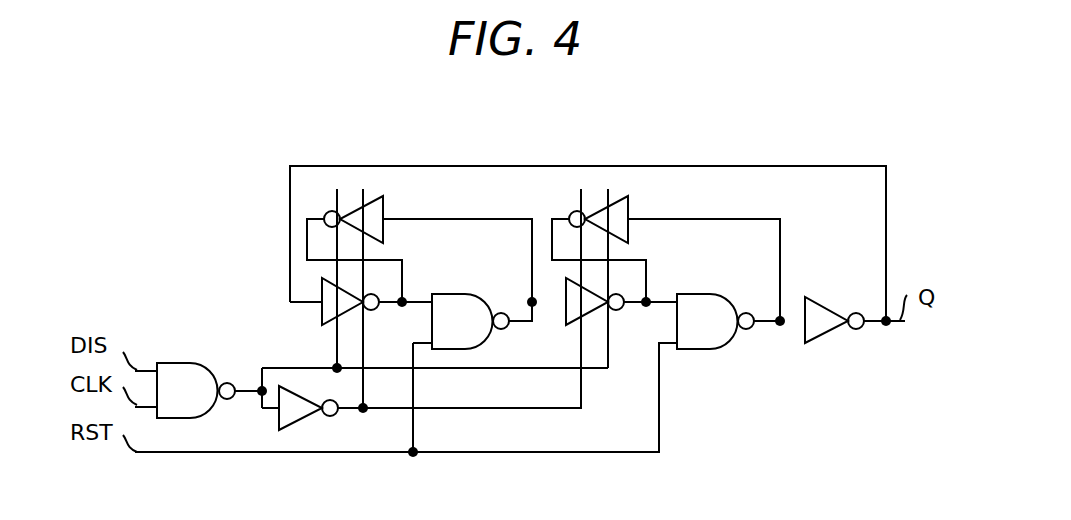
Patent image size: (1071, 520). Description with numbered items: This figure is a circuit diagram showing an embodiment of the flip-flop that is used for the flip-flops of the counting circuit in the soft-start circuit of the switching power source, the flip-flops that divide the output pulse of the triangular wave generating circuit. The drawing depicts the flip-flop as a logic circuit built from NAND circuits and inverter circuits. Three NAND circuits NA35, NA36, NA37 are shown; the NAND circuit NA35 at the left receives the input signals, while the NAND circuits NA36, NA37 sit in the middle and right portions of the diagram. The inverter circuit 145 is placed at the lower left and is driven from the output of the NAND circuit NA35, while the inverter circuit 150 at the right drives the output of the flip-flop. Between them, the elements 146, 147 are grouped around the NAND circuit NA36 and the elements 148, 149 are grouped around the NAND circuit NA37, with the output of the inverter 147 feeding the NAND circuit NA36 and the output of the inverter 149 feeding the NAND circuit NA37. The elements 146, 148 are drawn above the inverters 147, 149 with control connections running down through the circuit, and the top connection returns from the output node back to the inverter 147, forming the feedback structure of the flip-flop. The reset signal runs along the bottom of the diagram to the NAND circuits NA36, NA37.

The NAND gate NA35 is at (182, 363).
The NAND gate NA36 is at (457, 294).
The NAND gate NA37 is at (698, 294).
The inverter 145 is at (295, 427).
The tri-state inverter 146 is at (383, 210).
The inverter 147 is at (321, 310).
The tri-state inverter 148 is at (630, 210).
The inverter 149 is at (565, 311).
The inverter 150 is at (826, 310).